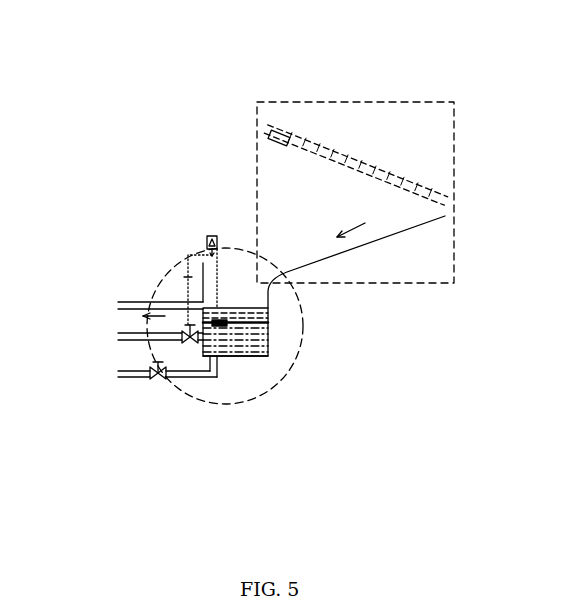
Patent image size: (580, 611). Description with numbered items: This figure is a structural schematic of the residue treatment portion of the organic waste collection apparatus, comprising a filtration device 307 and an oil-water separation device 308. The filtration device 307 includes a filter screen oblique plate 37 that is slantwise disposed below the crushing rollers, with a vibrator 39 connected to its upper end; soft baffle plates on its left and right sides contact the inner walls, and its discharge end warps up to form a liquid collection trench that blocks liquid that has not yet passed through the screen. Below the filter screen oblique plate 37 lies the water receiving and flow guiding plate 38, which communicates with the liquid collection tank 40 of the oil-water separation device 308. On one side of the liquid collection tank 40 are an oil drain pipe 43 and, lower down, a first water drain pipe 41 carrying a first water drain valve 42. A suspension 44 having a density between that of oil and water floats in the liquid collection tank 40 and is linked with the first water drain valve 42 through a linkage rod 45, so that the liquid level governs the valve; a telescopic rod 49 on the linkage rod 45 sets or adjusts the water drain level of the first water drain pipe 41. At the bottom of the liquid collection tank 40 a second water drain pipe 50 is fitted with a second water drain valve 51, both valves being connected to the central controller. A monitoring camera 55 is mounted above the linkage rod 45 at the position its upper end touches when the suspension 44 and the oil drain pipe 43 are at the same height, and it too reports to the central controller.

The filter screen oblique plate 37 is at (233, 116).
The vibrator 39 is at (154, 104).
The water receiving and flow guiding plate 38 is at (231, 205).
The filtration device 307 is at (396, 170).
The oil-water separation device 308 is at (306, 326).
The monitoring camera 55 is at (117, 231).
The telescopic rod 49 is at (103, 257).
The linkage rod 45 is at (105, 253).
The suspension 44 is at (143, 302).
The oil drain pipe 43 is at (110, 301).
The first water drain pipe 41 is at (110, 357).
The first water drain valve 42 is at (110, 375).
The second water drain valve 51 is at (95, 414).
The second water drain pipe 50 is at (119, 429).
The liquid collection tank 40 is at (145, 450).